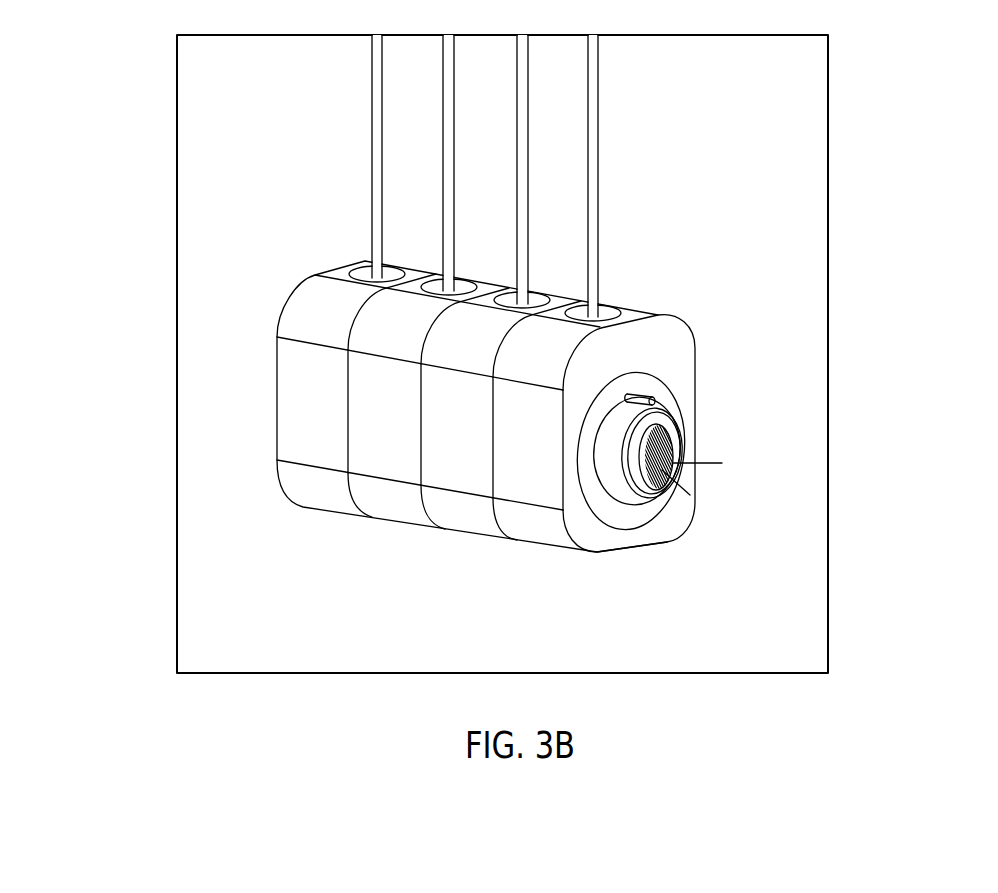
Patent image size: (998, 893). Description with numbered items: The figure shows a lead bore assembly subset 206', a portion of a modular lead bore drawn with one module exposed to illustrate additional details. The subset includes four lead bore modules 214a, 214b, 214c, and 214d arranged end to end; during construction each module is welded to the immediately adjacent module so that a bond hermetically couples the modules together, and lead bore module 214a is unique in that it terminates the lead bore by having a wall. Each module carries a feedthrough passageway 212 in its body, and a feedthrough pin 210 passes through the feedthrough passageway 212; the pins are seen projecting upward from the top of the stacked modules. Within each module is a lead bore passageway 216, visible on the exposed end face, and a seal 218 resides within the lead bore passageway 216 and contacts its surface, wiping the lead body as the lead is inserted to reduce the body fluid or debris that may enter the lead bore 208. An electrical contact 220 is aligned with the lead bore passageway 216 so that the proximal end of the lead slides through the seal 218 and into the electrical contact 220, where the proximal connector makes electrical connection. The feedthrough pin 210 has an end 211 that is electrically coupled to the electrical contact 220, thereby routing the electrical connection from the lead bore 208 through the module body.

The lead bore assembly subset 206' is at (597, 380).
The lead bore 208 is at (668, 468).
The feedthrough pin 210 is at (593, 83).
The end of feedthrough pin 211 is at (648, 374).
The feedthrough passageway 212 is at (650, 318).
The lead bore module 214a is at (307, 315).
The lead bore module 214b is at (383, 341).
The lead bore module 214c is at (458, 352).
The lead bore module 214d is at (535, 358).
The lead bore passageway 216 is at (660, 382).
The seal 218 is at (656, 388).
The electrical contact 220 is at (672, 424).